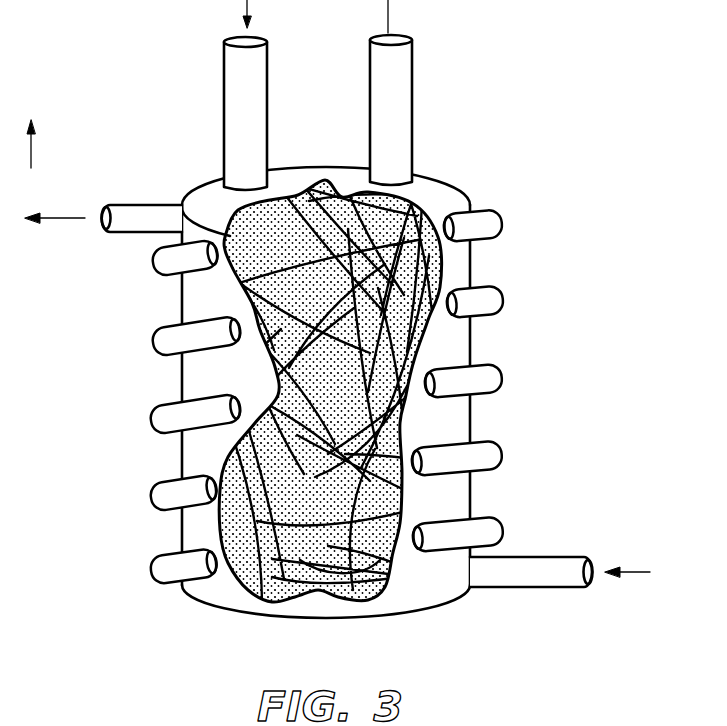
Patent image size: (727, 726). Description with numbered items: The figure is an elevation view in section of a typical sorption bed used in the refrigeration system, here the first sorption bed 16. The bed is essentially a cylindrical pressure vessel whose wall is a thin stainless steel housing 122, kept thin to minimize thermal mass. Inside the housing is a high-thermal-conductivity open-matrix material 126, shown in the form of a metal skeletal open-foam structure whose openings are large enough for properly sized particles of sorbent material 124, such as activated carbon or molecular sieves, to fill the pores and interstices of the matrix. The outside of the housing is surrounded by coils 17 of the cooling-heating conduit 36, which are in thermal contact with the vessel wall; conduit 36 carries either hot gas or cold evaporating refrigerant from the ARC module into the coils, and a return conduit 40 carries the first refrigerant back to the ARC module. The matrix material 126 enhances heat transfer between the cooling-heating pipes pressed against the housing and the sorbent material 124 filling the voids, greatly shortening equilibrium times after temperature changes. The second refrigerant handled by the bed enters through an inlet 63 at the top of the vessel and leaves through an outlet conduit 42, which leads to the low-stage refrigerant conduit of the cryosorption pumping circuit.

The first sorption bed 16 is at (488, 268).
The coils 17 is at (170, 405).
The conduit 36 is at (540, 557).
The return conduit 40 is at (135, 232).
The outlet conduit 42 is at (412, 108).
The inlet 63 is at (223, 117).
The stainless steel housing 122 is at (475, 418).
The sorbent material 124 is at (283, 603).
The open-matrix material 126 is at (323, 587).